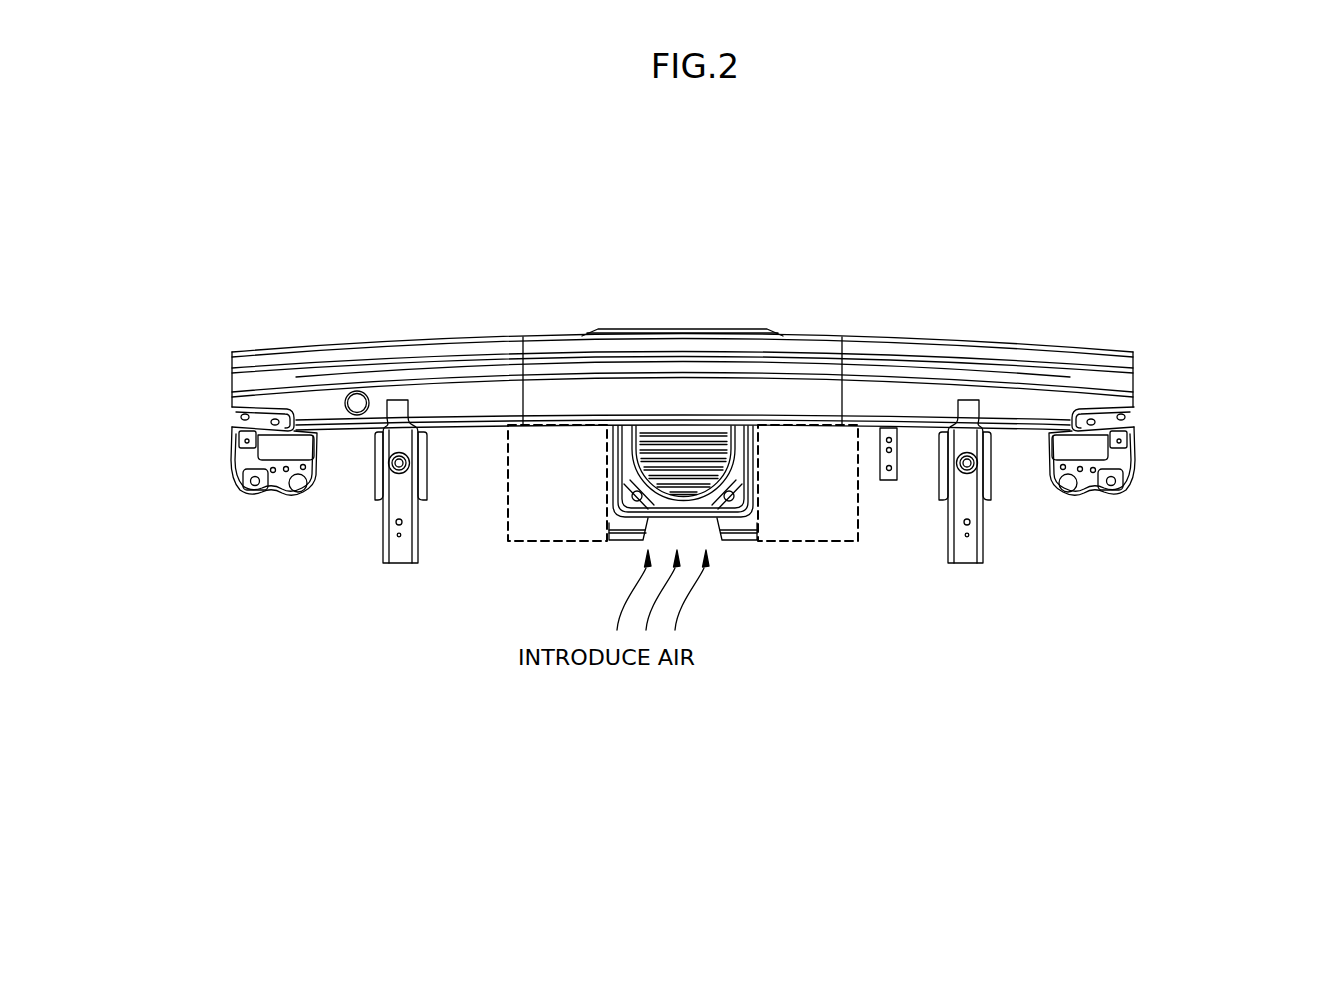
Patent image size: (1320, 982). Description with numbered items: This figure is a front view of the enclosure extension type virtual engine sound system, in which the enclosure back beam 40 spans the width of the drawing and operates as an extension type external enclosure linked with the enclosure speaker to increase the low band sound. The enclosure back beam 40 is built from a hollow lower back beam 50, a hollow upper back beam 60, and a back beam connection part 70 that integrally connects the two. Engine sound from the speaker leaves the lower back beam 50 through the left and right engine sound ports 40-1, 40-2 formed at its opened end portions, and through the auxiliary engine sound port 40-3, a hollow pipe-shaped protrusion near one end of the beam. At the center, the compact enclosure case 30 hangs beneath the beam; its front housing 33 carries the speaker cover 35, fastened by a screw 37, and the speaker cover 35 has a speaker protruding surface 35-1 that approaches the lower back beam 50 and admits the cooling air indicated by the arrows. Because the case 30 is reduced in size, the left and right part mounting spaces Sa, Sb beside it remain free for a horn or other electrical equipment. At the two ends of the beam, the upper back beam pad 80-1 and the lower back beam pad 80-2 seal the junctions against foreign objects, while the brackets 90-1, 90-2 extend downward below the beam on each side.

The enclosure case 30 is at (668, 332).
The front housing 33 is at (747, 520).
The speaker cover 35 is at (735, 472).
The speaker protruding surface 35-1 is at (693, 442).
The screw 37 is at (733, 490).
The enclosure back beam 40 is at (1107, 203).
The left engine sound port 40-1 is at (1133, 409).
The right engine sound port 40-2 is at (233, 409).
The auxiliary engine sound port 40-3 is at (357, 400).
The lower back beam 50 is at (1048, 408).
The upper back beam 60 is at (1020, 340).
The back beam connection part 70 is at (1028, 373).
The upper back beam pad 80-1 is at (278, 448).
The lower back beam pad 80-2 is at (1102, 448).
The left stay 90-1 is at (393, 510).
The right stay 90-2 is at (980, 530).
The left part mounting space Sa is at (557, 483).
The right part mounting space Sb is at (808, 483).